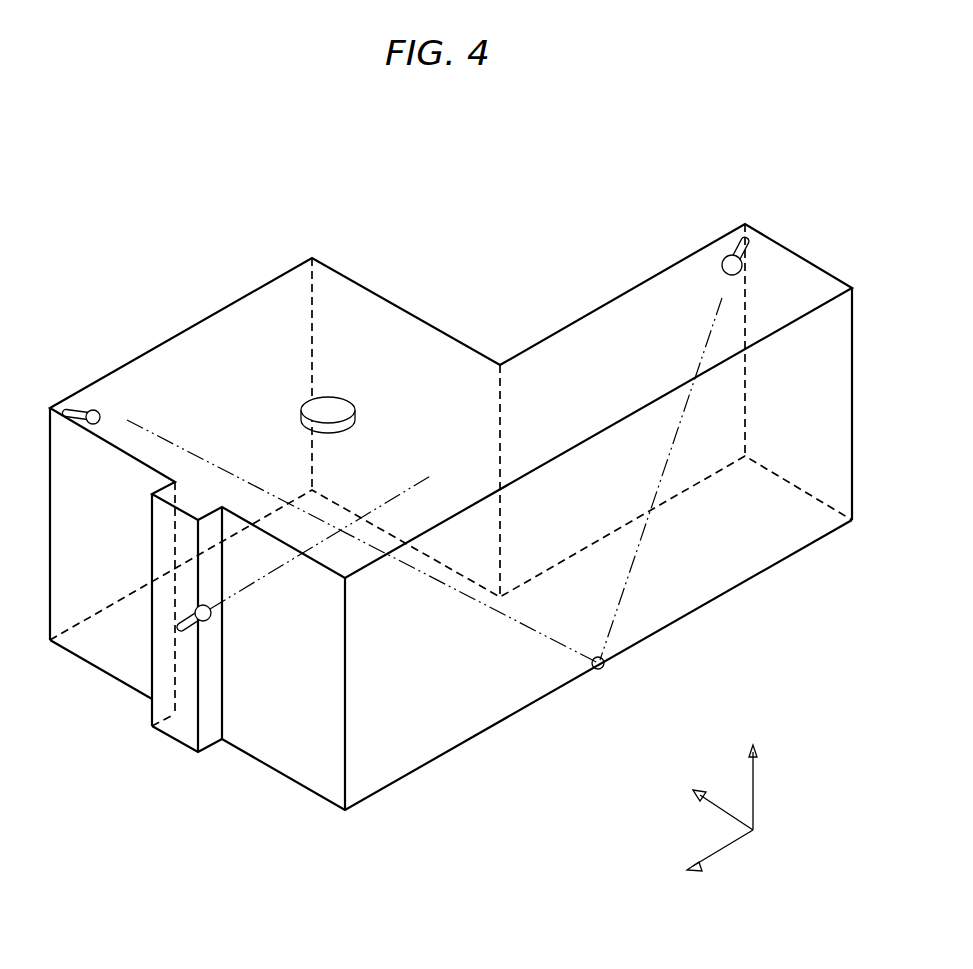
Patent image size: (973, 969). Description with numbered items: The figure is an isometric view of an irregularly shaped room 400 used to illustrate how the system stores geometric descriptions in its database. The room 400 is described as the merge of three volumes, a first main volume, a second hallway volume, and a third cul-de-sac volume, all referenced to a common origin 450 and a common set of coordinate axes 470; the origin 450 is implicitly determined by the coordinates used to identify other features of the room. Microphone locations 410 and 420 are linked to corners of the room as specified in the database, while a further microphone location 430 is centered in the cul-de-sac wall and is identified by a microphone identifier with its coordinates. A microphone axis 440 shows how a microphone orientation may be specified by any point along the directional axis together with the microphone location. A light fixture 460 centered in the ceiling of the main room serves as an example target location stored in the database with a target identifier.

The irregularly shaped room 400 is at (852, 395).
The microphone location 410 is at (724, 276).
The microphone location 420 is at (100, 415).
The microphone location 430 is at (210, 620).
The microphone axis 440 is at (372, 507).
The common origin 450 is at (604, 665).
The light fixture 460 is at (337, 396).
The coordinate axes 470 is at (753, 803).